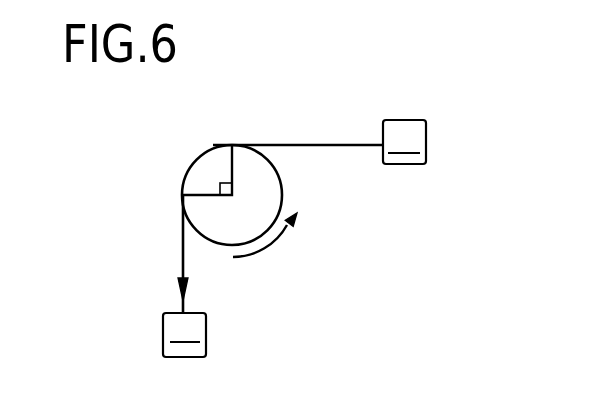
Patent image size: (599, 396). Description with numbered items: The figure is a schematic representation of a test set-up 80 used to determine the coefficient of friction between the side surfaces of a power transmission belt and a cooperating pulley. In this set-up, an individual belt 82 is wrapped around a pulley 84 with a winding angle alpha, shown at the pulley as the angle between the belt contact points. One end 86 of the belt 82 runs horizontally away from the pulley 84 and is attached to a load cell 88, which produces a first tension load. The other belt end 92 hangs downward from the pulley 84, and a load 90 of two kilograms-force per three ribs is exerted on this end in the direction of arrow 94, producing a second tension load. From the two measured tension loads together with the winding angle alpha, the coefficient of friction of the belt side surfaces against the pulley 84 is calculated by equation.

The test set-up 80 is at (341, 96).
The belt 82 is at (273, 144).
The pulley 84 is at (260, 188).
The one end of the belt 86 is at (360, 144).
The load cell 88 is at (404, 142).
The load 90 is at (184, 335).
The other belt end 92 is at (185, 304).
The arrow 94 is at (183, 263).